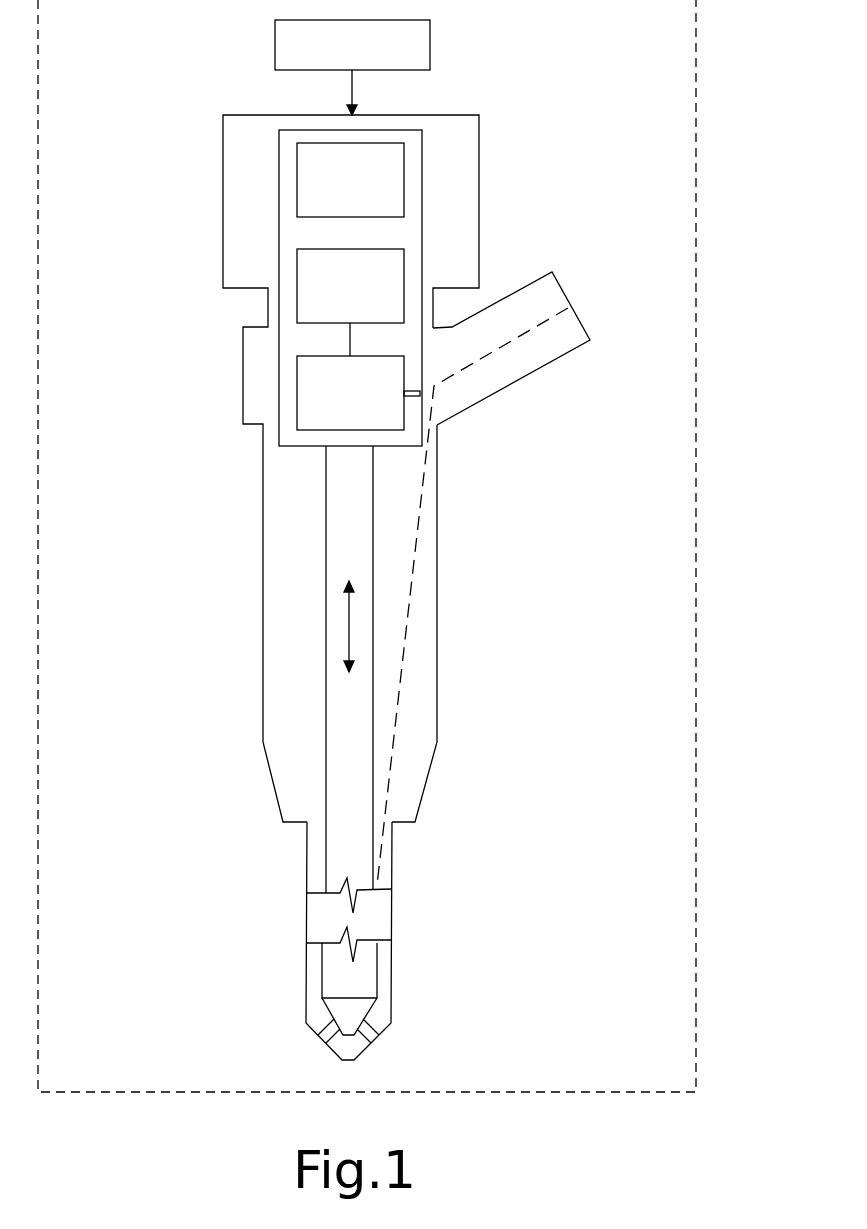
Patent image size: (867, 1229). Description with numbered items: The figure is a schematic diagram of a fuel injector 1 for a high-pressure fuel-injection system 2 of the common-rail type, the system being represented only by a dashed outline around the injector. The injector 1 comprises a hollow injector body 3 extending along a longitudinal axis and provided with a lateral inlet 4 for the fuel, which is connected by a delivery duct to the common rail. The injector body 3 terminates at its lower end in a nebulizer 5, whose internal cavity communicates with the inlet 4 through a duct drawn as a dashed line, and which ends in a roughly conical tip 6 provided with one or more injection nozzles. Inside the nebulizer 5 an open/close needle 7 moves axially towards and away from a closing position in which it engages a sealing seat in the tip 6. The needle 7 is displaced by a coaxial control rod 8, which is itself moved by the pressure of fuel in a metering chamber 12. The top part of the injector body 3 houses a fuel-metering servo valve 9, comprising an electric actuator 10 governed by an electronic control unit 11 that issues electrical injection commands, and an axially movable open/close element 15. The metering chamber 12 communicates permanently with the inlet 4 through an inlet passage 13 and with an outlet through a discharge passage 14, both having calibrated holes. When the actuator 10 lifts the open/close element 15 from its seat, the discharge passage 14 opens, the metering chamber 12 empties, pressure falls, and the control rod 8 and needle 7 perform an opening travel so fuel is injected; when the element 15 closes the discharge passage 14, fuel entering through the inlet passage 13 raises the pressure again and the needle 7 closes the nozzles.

The fuel injector 1 is at (580, 136).
The high-pressure fuel-injection system 2 is at (686, 62).
The injector body 3 is at (283, 527).
The lateral inlet 4 is at (567, 340).
The nebulizer 5 is at (334, 941).
The tip 6 is at (368, 1023).
The open/close needle 7 is at (352, 972).
The control rod 8 is at (342, 720).
The fuel-metering servo valve 9 is at (409, 170).
The electric actuator 10 is at (310, 176).
The electronic control unit 11 is at (430, 45).
The metering chamber 12 is at (315, 388).
The inlet passage 13 is at (407, 396).
The discharge passage 14 is at (350, 342).
The open/close element 15 is at (318, 287).